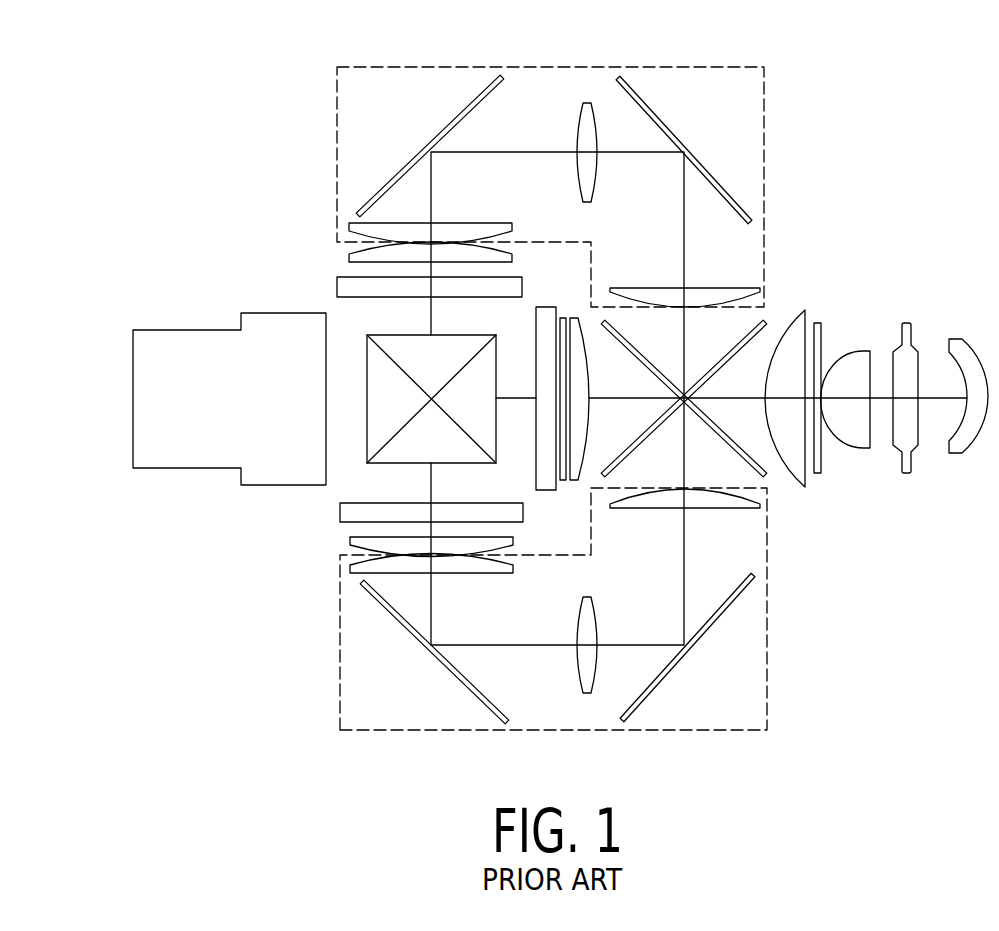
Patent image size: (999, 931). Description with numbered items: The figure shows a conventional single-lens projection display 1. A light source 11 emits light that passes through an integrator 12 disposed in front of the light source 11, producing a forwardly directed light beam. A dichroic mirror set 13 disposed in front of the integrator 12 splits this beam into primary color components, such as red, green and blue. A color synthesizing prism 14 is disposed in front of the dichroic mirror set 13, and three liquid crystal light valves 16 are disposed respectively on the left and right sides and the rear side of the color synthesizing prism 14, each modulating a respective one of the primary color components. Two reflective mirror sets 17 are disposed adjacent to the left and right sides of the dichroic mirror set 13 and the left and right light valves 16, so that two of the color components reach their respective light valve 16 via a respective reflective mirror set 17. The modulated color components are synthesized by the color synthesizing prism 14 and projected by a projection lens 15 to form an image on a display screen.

The single-lens projection display 1 is at (884, 200).
The light source 11 is at (905, 370).
The integrator 12 is at (835, 492).
The dichroic mirror set 13 is at (765, 325).
The color synthesizing prism 14 is at (373, 410).
The projection lens 15 is at (217, 387).
The liquid crystal light valves 16 is at (350, 288).
The reflective mirror sets 17 is at (548, 90).